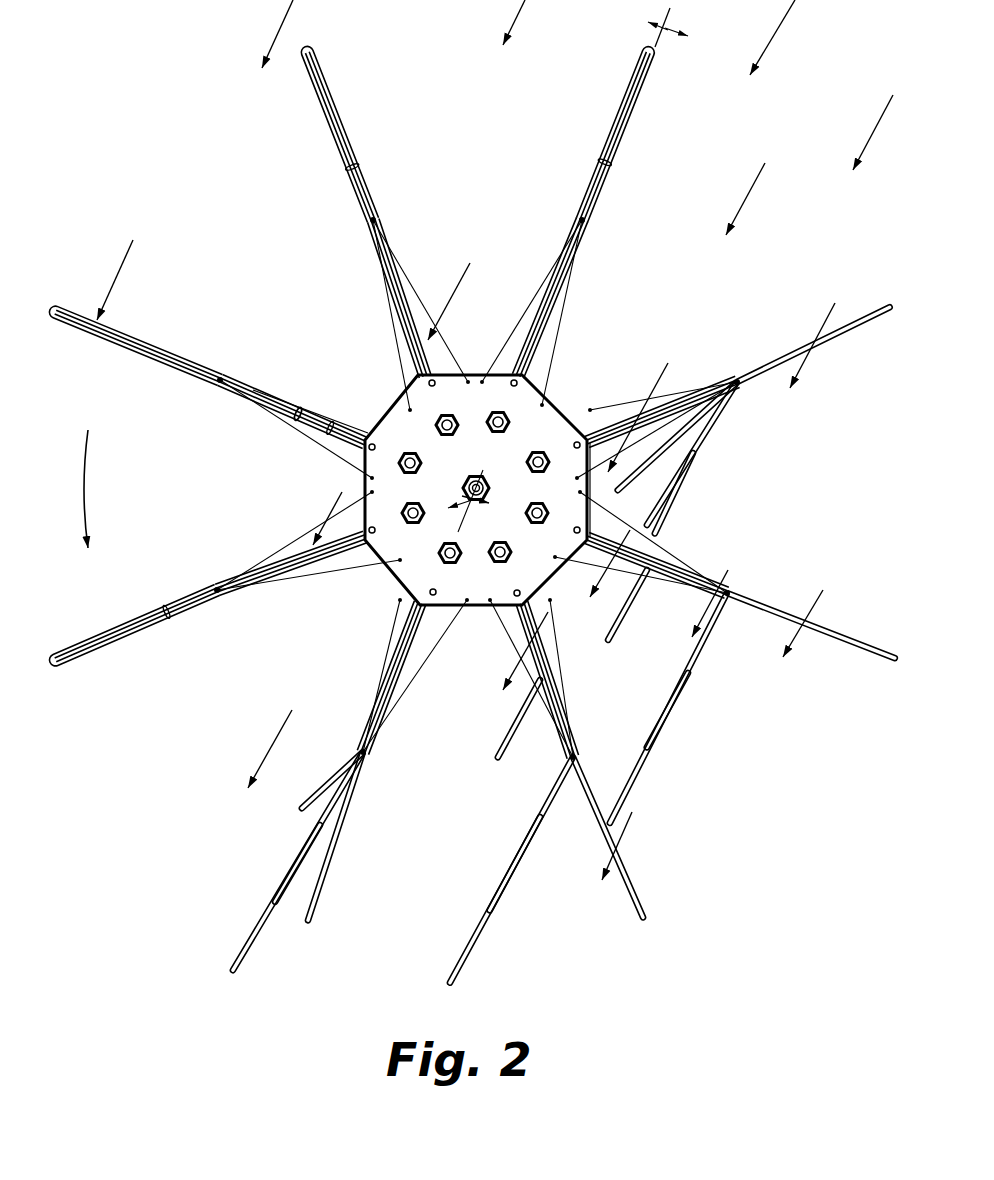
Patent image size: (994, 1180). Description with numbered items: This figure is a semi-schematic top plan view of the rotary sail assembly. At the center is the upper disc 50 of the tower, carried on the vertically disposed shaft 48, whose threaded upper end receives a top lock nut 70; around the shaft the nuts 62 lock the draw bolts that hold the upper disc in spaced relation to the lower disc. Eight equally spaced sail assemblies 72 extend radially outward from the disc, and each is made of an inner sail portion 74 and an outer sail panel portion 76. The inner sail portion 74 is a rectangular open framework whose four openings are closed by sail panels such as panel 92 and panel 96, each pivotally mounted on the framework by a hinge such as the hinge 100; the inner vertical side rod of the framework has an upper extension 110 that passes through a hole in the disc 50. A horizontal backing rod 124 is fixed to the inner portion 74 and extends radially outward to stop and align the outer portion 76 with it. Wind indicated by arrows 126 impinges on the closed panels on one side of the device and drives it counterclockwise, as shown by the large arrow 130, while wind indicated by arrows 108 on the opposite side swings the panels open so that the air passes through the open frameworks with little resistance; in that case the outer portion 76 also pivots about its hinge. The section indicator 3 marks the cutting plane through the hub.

The section line 3- 3 is at (575, 267).
The shaft 48 is at (480, 484).
The upper disc 50 is at (476, 466).
The nuts 62 is at (415, 467).
The top lock nut 70 is at (484, 488).
The sail assemblies 72 is at (357, 207).
The inner sail portion 74 is at (601, 192).
The outer sail panel portion 76 is at (559, 292).
The sail panel 92 is at (402, 416).
The sail panel 96 is at (268, 377).
The hinge 100 is at (297, 407).
The arrow 108 is at (807, 365).
The upper extension 110 is at (511, 385).
The horizontal backing rod 124 is at (112, 346).
The arrows 126 is at (403, 87).
The large arrow 130 is at (90, 497).